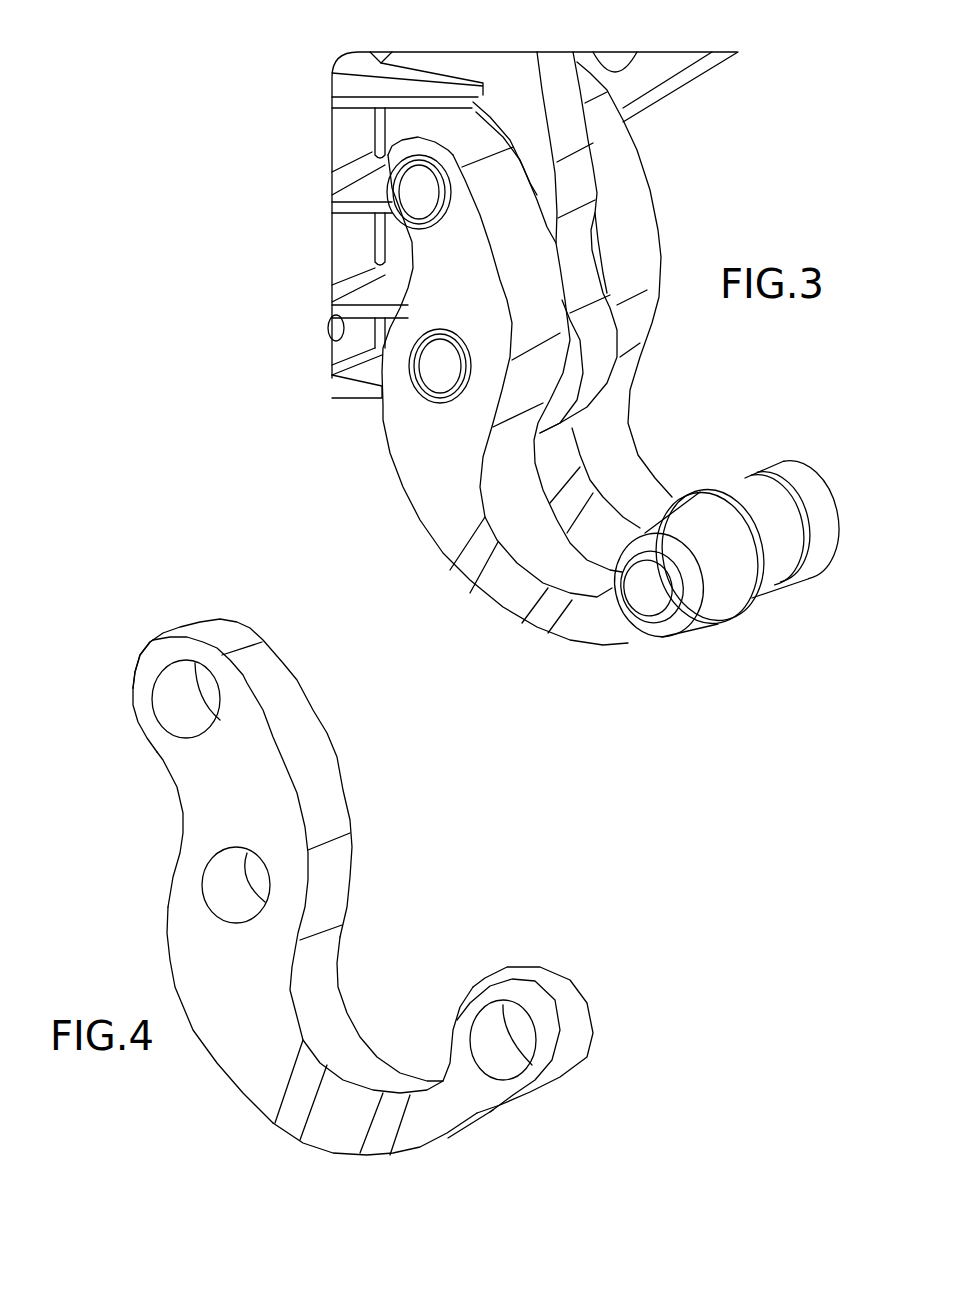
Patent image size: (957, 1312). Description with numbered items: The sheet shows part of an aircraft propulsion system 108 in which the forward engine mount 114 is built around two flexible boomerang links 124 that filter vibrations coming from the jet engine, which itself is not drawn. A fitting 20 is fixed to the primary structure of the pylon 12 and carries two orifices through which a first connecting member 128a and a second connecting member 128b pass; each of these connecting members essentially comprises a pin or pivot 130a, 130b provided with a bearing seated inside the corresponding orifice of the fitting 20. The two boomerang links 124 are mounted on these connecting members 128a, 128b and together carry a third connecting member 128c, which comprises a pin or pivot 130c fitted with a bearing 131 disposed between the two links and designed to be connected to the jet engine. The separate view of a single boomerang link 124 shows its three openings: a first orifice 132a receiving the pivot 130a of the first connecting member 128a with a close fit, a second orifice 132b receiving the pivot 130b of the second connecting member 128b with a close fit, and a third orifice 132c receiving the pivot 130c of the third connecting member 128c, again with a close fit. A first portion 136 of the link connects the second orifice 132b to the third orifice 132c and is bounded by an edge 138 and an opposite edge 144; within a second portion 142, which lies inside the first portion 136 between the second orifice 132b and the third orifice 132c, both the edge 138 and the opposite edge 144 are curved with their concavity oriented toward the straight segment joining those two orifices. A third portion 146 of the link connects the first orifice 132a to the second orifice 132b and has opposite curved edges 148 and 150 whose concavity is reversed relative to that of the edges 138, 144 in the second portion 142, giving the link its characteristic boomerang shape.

In FIG. 3, the fitting 20 is at (504, 58).
In FIG. 3, the pylon 12 is at (703, 72).
In FIG. 3, the propulsion system 108 is at (715, 180).
In FIG. 3, the forward engine mount 114 is at (690, 372).
In FIG. 3, the boomerang link 124 is at (569, 412).
In FIG. 4, the boomerang link 124 is at (361, 919).
In FIG. 3, the first connecting member 128a is at (349, 189).
In FIG. 3, the second connecting member 128b is at (364, 397).
In FIG. 3, the third connecting member 128c is at (673, 623).
In FIG. 3, the pivot 130a is at (432, 197).
In FIG. 3, the pivot 130b is at (440, 363).
In FIG. 3, the pivot 130c is at (652, 606).
In FIG. 3, the bearing 131 is at (777, 586).
In FIG. 4, the first orifice 132a is at (173, 688).
In FIG. 4, the second orifice 132b is at (215, 872).
In FIG. 4, the third orifice 132c is at (530, 1030).
In FIG. 4, the first portion 136 is at (305, 1124).
In FIG. 4, the edge 138 is at (358, 1050).
In FIG. 4, the second portion 142 is at (255, 1093).
In FIG. 4, the opposite edge 144 is at (308, 1150).
In FIG. 4, the third portion 146 is at (260, 757).
In FIG. 4, the curved edge 148 is at (288, 680).
In FIG. 4, the curved edge 150 is at (160, 758).